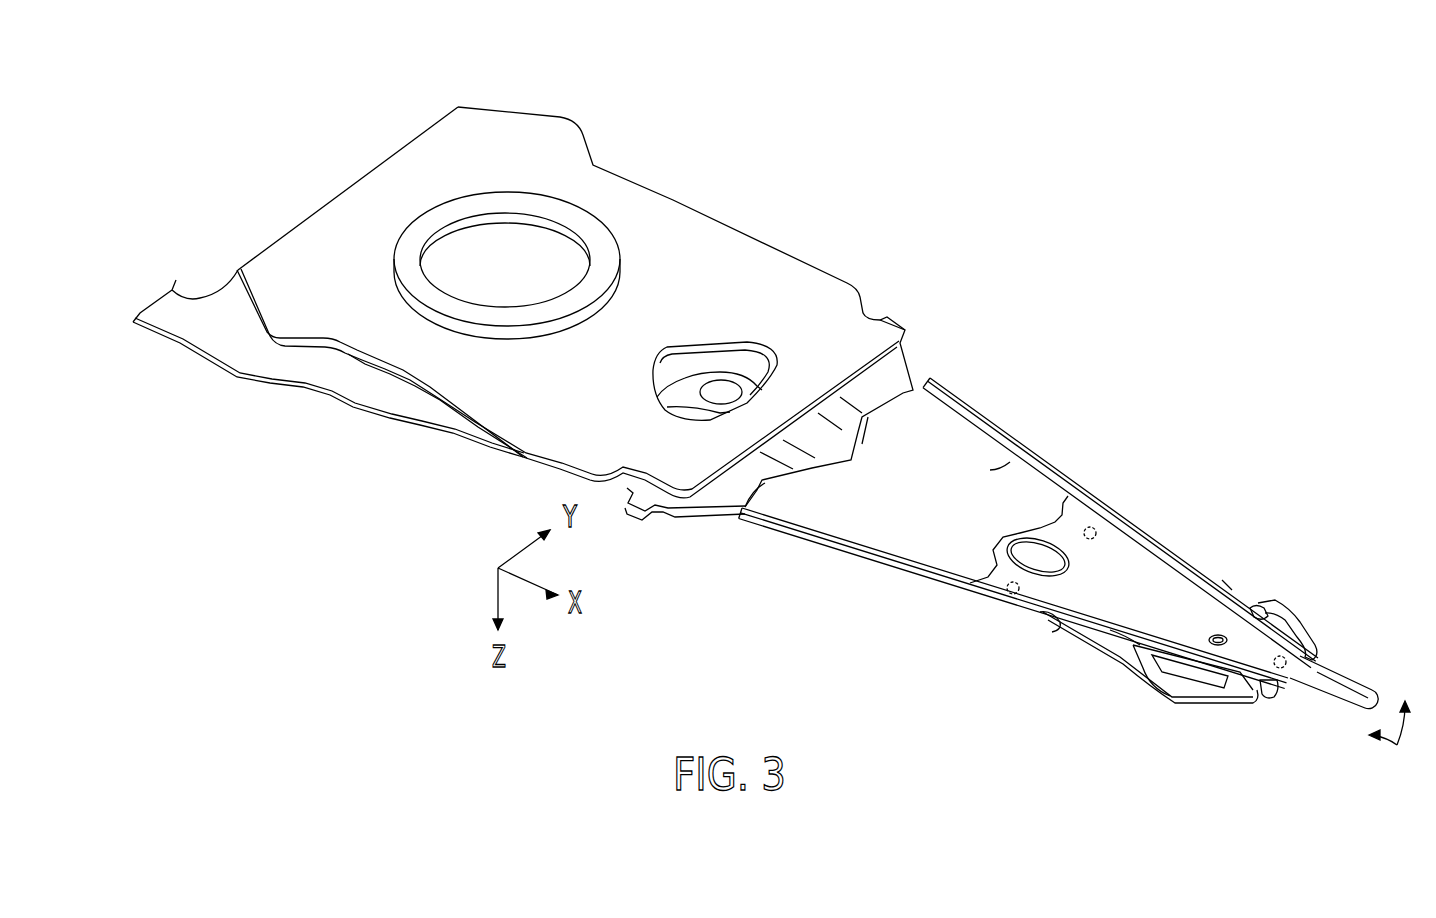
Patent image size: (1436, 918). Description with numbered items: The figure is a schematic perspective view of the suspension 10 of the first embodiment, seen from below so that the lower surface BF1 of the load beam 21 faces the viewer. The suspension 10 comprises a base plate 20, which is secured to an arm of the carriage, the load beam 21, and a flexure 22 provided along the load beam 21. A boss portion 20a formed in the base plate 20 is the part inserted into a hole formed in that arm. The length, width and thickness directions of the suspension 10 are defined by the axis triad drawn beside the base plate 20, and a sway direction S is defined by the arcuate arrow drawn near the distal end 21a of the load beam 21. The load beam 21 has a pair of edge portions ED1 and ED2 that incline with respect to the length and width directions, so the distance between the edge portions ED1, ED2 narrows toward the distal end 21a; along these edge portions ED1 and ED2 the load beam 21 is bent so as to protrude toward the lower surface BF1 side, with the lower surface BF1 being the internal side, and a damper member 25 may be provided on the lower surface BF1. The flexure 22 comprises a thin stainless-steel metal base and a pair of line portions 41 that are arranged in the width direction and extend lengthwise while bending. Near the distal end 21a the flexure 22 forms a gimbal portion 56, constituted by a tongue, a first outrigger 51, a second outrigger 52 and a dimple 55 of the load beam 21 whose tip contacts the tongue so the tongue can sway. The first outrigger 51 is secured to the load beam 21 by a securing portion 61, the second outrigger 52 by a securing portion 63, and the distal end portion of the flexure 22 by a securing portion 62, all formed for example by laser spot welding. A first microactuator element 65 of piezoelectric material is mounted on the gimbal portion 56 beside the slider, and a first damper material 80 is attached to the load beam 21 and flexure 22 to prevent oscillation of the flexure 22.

The suspension 10 is at (983, 192).
The base plate 20 is at (694, 238).
The boss portion 20a is at (586, 228).
The load beam 21 is at (1087, 535).
The distal end of the load beam 21a is at (1371, 679).
The flexure 22 is at (1230, 586).
The damper member 25 is at (965, 473).
The line portions 41 is at (420, 425).
The first outrigger 51 is at (1090, 650).
The second outrigger 52 is at (1237, 603).
The dimple 55 is at (1245, 620).
The gimbal portion 56 is at (1138, 694).
The securing portion 61 is at (990, 597).
The securing portion 62 is at (1300, 650).
The securing portion 63 is at (1092, 527).
The first microactuator element 65 is at (1190, 672).
The first damper material 80 is at (1052, 623).
The edge portion ED1 is at (907, 572).
The edge portion ED2 is at (964, 403).
The lower surface BF1 is at (1140, 665).
The sway direction S is at (1389, 740).